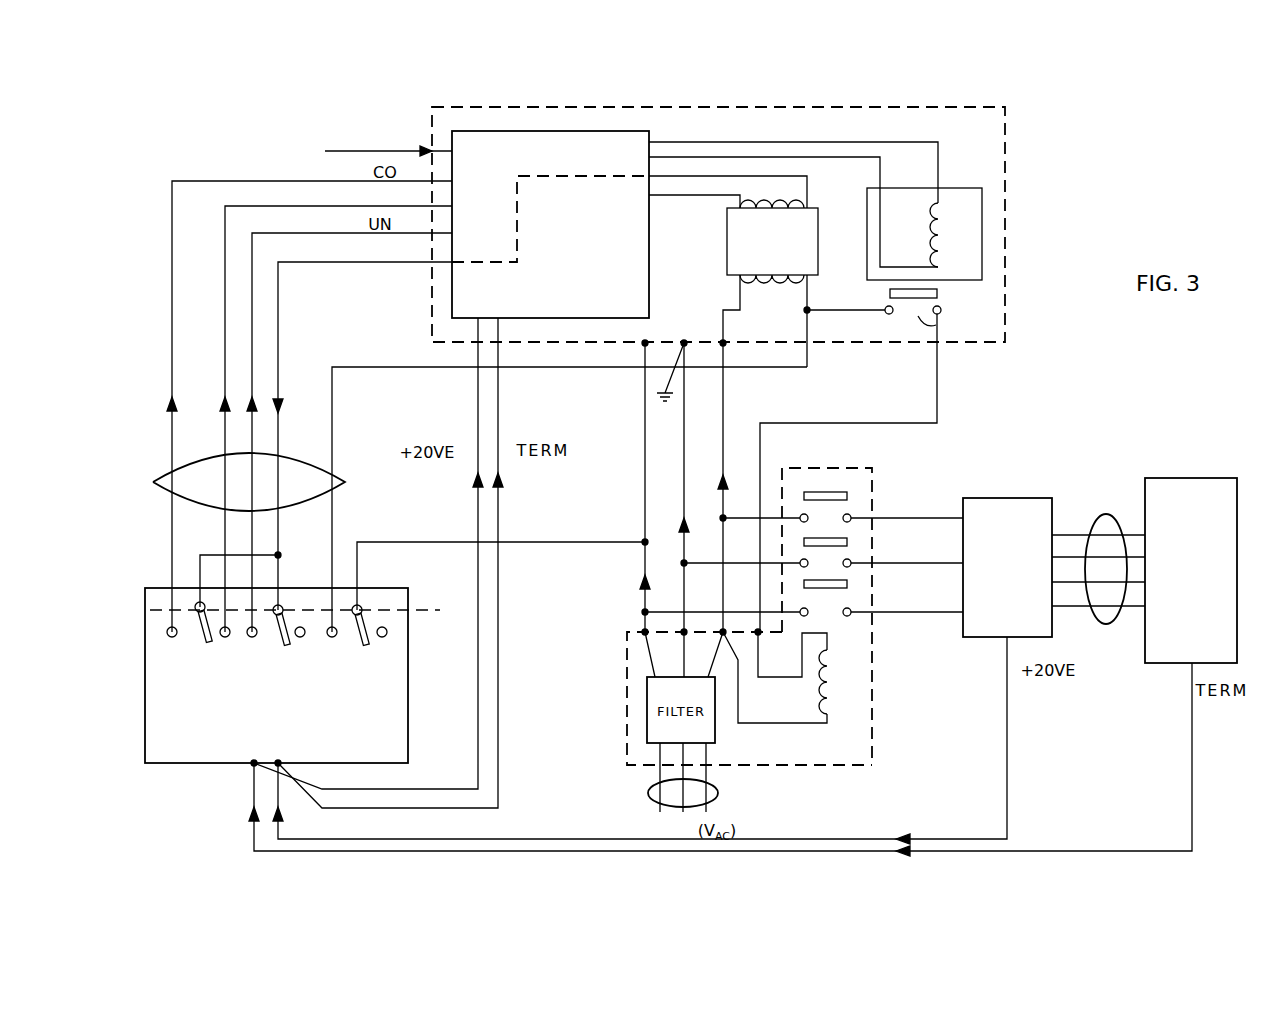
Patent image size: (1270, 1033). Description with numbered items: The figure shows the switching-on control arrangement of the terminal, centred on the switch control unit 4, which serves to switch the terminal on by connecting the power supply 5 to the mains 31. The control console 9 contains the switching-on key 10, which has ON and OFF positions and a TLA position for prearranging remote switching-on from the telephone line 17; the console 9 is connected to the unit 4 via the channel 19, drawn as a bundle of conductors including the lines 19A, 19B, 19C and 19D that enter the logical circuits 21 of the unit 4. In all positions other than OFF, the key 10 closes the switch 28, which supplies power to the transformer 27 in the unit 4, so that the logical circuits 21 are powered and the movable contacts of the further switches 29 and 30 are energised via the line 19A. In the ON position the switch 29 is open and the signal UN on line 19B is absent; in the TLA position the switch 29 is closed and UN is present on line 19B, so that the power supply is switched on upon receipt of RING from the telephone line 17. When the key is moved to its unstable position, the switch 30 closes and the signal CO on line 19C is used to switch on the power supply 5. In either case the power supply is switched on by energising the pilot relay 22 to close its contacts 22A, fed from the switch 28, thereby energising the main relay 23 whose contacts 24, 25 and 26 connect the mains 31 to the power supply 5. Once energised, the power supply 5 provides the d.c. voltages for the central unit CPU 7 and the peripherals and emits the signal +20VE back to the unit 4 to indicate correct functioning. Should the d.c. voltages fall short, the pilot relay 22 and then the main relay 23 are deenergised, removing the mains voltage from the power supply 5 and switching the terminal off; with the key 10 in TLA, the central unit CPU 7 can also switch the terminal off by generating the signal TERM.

The switch control unit 4 is at (1005, 197).
The power supply unit 5 is at (975, 637).
The central unit CPU 7 is at (1178, 478).
The control console 9 is at (173, 765).
The switching-on key 10 is at (433, 612).
The telephone line 17 is at (326, 152).
The channel 19 is at (162, 493).
The line 19A is at (278, 330).
The line 19B is at (252, 280).
The line 19C is at (172, 352).
The conductor 19D is at (225, 283).
The logical circuits 21 is at (651, 294).
The pilot relay 22 is at (957, 188).
The contacts 22A is at (940, 320).
The main relay 23 is at (831, 685).
The contact 24 is at (832, 492).
The contact 25 is at (849, 542).
The contact 26 is at (849, 585).
The transformer 27 is at (727, 243).
The switch 28 is at (341, 650).
The switch 29 is at (261, 650).
The switch 30 is at (183, 650).
The mains 31 is at (719, 792).